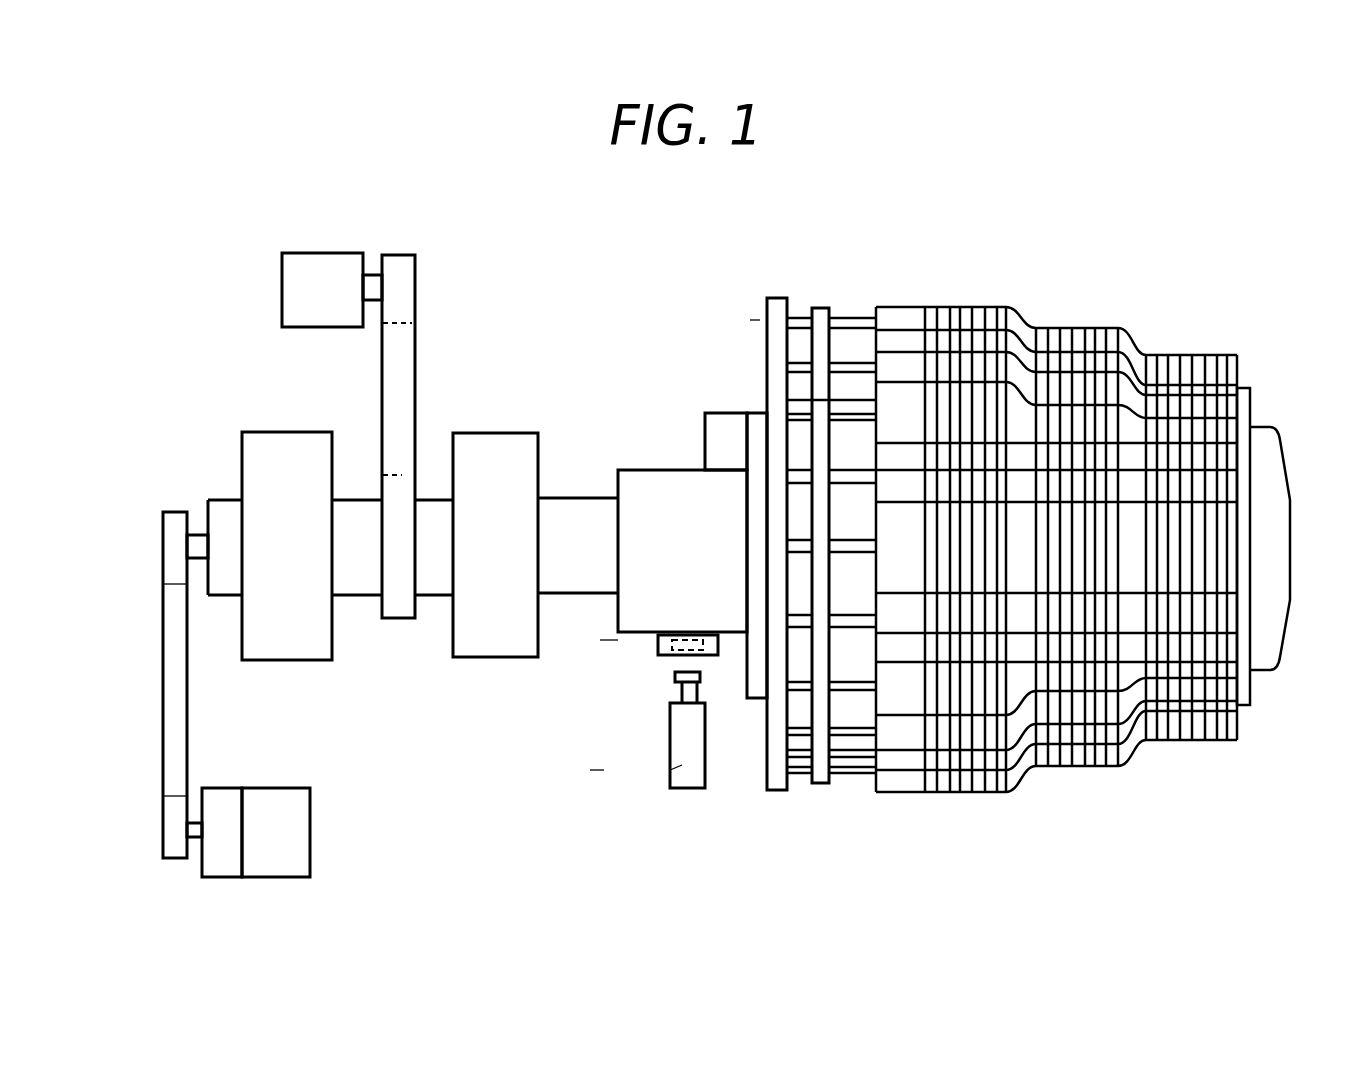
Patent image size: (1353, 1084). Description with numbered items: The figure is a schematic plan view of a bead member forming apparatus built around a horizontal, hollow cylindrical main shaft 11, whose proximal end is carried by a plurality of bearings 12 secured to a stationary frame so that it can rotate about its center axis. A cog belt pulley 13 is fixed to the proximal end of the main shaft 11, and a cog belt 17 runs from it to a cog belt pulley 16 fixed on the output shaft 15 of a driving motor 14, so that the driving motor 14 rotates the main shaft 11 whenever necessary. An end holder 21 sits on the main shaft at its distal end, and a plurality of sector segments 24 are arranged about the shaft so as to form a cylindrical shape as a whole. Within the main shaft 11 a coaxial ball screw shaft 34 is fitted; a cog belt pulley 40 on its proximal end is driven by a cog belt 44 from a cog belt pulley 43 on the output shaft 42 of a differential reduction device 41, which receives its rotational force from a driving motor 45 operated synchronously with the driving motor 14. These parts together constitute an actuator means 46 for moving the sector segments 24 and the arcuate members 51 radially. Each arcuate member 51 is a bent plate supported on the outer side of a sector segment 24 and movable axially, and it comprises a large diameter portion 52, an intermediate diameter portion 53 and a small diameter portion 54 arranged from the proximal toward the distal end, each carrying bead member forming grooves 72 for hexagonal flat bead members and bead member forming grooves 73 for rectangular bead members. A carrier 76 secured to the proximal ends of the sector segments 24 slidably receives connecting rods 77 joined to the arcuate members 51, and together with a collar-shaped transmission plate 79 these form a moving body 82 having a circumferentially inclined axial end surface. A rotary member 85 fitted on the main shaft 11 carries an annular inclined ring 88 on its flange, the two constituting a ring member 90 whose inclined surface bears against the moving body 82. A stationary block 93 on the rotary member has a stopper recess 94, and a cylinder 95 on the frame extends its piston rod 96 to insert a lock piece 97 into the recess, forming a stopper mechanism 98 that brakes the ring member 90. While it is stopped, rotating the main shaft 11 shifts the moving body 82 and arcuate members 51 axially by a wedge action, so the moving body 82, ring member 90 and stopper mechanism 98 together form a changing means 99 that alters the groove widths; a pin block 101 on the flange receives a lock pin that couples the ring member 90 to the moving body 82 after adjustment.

The main shaft 11 is at (578, 520).
The bearings 12 is at (284, 455).
The cog belt pulley 13 is at (402, 476).
The driving motor 14 is at (318, 262).
The output shaft 15 is at (375, 288).
The cog belt pulley 16 is at (400, 333).
The cog belt 17 is at (396, 378).
The end holder 21 is at (1275, 460).
The sector segments 24 is at (860, 332).
The ball screw shaft 34 is at (200, 532).
The cog belt pulley 40 is at (178, 583).
The differential reduction device 41 is at (222, 805).
The output shaft 42 is at (190, 840).
The cog belt pulley 43 is at (178, 796).
The cog belt 44 is at (170, 680).
The driving motor 45 is at (280, 805).
The actuator means 46 is at (320, 806).
The arcuate members 51 is at (1135, 348).
The large diameter portion 52 is at (905, 315).
The intermediate diameter portion 53 is at (1090, 330).
The small diameter portion 54 is at (1195, 352).
The bead member forming grooves 72 is at (1030, 322).
The bead member forming grooves 73 is at (1046, 326).
The carrier 76 is at (822, 788).
The connecting rods 77 is at (848, 405).
The transmission plate 79 is at (772, 348).
The moving body 82 is at (812, 302).
The rotary member 85 is at (672, 492).
The inclined ring 88 is at (758, 690).
The ring member 90 is at (592, 636).
The stationary block 93 is at (660, 649).
The stopper recess 94 is at (706, 635).
The cylinder 95 is at (680, 765).
The piston rod 96 is at (672, 715).
The lock piece 97 is at (675, 682).
The stopper mechanism 98 is at (575, 770).
The changing means 99 is at (742, 316).
The pin block 101 is at (706, 416).